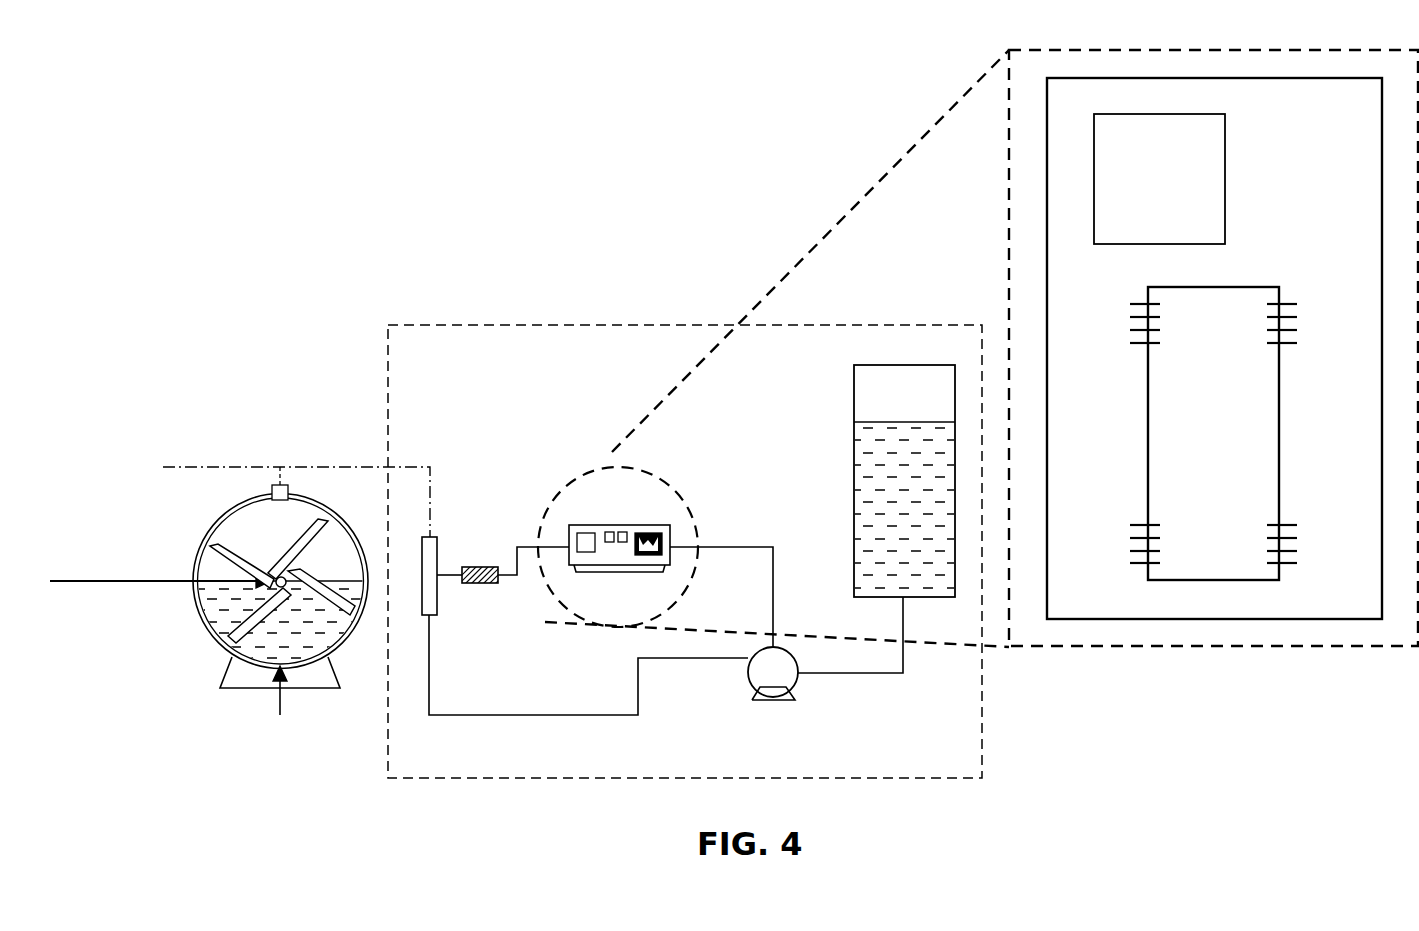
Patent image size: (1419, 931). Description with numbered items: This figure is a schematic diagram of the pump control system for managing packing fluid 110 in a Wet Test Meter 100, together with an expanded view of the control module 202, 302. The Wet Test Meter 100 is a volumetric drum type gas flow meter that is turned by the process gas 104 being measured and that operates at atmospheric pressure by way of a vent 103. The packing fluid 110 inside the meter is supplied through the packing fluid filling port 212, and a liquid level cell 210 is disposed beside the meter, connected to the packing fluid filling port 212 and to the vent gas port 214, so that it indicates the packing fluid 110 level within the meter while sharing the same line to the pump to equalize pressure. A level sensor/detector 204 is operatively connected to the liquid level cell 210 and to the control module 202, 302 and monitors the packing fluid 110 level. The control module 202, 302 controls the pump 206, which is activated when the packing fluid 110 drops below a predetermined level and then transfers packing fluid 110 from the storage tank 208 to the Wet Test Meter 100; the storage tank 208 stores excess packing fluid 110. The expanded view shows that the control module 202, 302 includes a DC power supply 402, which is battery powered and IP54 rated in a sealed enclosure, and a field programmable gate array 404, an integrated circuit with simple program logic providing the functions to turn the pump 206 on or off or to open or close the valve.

The Wet Test Meter 100 is at (205, 545).
The vent 103 is at (222, 468).
The process gas 104 is at (118, 580).
The packing fluid 110 is at (235, 613).
The control module 202 is at (612, 524).
The level sensor/detector 204 is at (480, 585).
The pump 206 is at (793, 685).
The storage tank 208 is at (913, 365).
The liquid level cell 210 is at (431, 537).
The packing fluid filling port 212 is at (275, 677).
The vent gas port 214 is at (290, 490).
The control module 302 is at (580, 524).
The DC power supply 402 is at (1215, 180).
The field programmable gate array 404 is at (1267, 430).